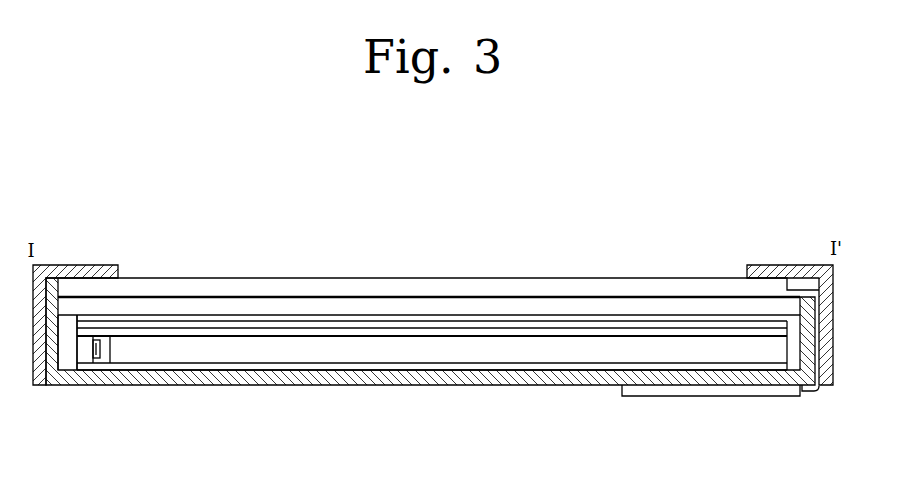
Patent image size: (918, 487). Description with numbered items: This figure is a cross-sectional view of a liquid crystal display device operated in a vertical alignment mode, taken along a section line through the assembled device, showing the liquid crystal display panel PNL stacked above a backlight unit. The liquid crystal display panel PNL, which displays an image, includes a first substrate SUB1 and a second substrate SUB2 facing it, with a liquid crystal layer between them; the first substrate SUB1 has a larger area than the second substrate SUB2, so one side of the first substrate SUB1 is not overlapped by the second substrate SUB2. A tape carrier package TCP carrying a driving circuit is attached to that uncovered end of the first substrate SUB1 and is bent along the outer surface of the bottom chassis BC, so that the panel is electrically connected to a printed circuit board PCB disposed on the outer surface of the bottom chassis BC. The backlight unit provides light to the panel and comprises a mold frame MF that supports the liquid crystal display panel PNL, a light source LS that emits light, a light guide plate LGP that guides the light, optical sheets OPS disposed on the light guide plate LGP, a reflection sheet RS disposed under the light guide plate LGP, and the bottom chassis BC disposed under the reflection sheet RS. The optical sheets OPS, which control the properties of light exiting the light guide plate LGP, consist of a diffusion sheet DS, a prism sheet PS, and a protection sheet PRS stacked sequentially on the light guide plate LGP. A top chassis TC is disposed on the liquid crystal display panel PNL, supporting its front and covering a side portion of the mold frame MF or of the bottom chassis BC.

The top chassis TC is at (68, 272).
The liquid crystal display panel PNL is at (438, 248).
The second substrate SUB2 is at (337, 284).
The first substrate SUB1 is at (325, 215).
The optical sheets OPS is at (432, 276).
The protection sheet PRS is at (492, 318).
The prism sheet PS is at (533, 325).
The diffusion sheet DS is at (497, 215).
The mold frame MF is at (67, 362).
The light source LS is at (83, 362).
The light guide plate LGP is at (155, 358).
The reflection sheet RS is at (222, 367).
The bottom chassis BC is at (292, 377).
The printed circuit board PCB is at (682, 396).
The tape carrier package TCP is at (808, 392).